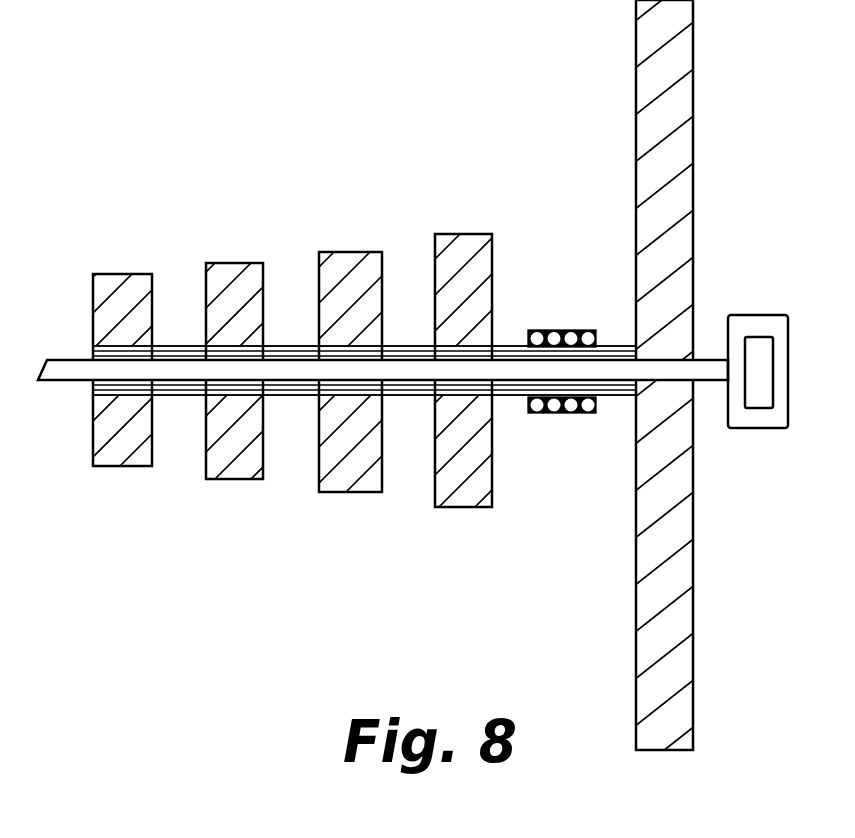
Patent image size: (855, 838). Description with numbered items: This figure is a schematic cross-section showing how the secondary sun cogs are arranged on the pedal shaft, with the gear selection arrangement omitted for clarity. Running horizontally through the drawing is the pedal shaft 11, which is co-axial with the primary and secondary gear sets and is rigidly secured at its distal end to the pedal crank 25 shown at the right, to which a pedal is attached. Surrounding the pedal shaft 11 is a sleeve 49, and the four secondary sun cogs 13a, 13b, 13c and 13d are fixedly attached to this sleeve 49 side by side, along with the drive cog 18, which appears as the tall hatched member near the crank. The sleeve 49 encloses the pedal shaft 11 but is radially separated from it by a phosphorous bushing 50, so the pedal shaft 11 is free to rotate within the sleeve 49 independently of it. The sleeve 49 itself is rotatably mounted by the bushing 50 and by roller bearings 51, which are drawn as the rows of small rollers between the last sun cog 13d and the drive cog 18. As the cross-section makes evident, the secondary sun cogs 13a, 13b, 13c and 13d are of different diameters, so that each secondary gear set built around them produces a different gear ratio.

The pedal shaft 11 is at (515, 372).
The secondary sun cog 13a is at (112, 450).
The secondary sun cog 13b is at (235, 285).
The secondary sun cog 13c is at (352, 268).
The secondary sun cog 13d is at (464, 465).
The drive cog 18 is at (673, 118).
The pedal crank 25 is at (772, 330).
The sleeve 49 is at (181, 335).
The phosphorous bushing 50 is at (182, 396).
The roller bearings 51 is at (578, 415).